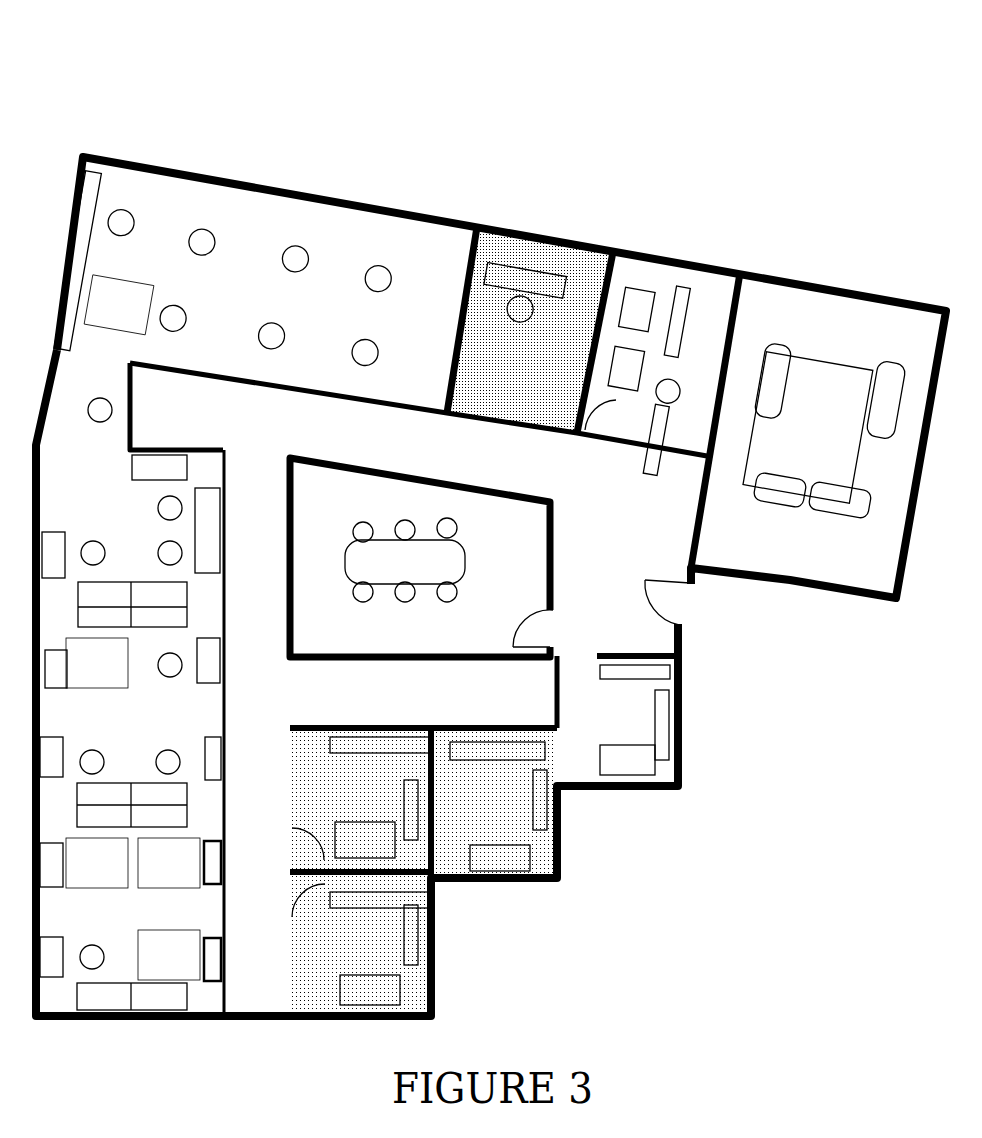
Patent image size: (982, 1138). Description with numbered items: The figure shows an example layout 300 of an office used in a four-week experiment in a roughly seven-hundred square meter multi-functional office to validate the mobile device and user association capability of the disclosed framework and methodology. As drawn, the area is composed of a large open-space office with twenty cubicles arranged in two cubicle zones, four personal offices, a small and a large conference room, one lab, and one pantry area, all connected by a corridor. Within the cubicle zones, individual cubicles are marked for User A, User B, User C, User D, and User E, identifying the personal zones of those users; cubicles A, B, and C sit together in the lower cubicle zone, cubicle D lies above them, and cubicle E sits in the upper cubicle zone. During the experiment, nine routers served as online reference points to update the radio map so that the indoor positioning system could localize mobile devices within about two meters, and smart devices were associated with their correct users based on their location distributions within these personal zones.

The example layout 300 is at (781, 198).
The User A is at (97, 863).
The User B is at (169, 863).
The User C is at (169, 955).
The User D is at (97, 663).
The User E is at (119, 305).